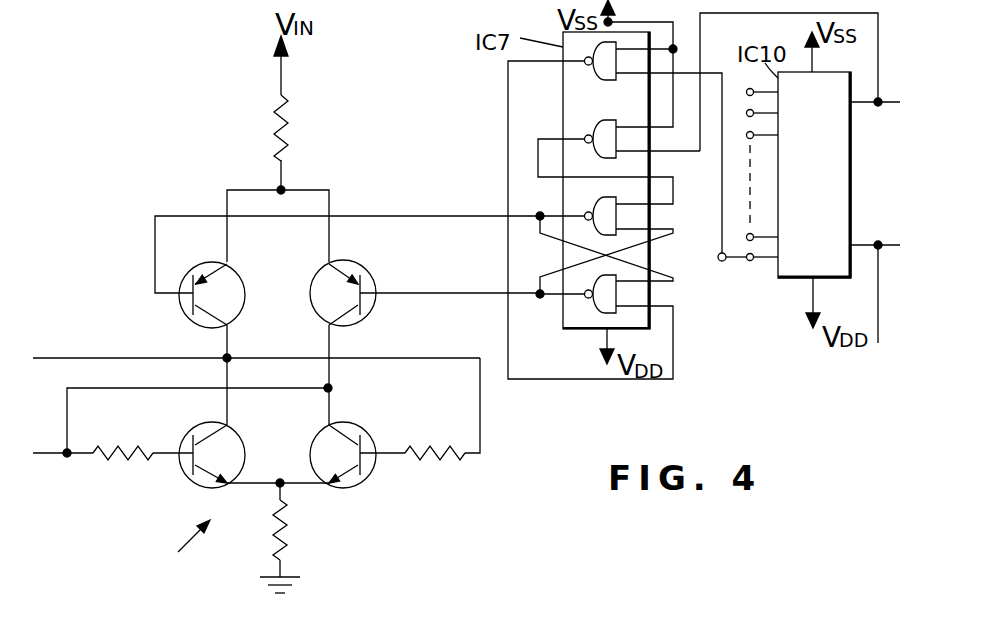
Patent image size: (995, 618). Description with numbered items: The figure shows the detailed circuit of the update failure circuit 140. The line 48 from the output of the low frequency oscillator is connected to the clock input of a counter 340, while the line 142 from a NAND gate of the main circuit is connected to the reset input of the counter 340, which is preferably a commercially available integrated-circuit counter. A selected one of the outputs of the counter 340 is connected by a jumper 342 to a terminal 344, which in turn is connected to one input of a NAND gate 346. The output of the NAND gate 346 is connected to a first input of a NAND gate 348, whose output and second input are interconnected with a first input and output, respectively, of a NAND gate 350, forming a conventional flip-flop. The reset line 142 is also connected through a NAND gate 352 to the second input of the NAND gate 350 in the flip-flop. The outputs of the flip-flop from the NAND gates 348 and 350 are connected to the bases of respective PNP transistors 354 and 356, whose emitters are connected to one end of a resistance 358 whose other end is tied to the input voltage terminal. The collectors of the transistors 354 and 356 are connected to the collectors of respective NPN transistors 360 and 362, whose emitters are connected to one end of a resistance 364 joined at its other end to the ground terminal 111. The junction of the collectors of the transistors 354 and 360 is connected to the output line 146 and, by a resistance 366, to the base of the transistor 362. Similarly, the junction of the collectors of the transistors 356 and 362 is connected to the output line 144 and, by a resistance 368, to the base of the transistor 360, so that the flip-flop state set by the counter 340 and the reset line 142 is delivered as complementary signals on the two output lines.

The resistance 358 is at (275, 130).
The PNP transistor 356 is at (238, 262).
The PNP transistor 354 is at (347, 262).
The output line 144 is at (53, 356).
The output line 146 is at (44, 460).
The resistance 366 is at (108, 450).
The NPN transistor 362 is at (244, 420).
The NPN transistor 360 is at (369, 433).
The resistance 368 is at (418, 462).
The resistance 364 is at (290, 540).
The ground terminal 111 is at (277, 577).
The update failure circuit 140 is at (192, 555).
The NAND gate 346 is at (605, 66).
The NAND gate 352 is at (593, 128).
The NAND gate 350 is at (593, 210).
The NAND gate 348 is at (597, 304).
The reset line 142 is at (705, 33).
The terminal 344 is at (721, 262).
The jumper 342 is at (740, 265).
The counter 340 is at (853, 165).
The line 48 is at (877, 344).